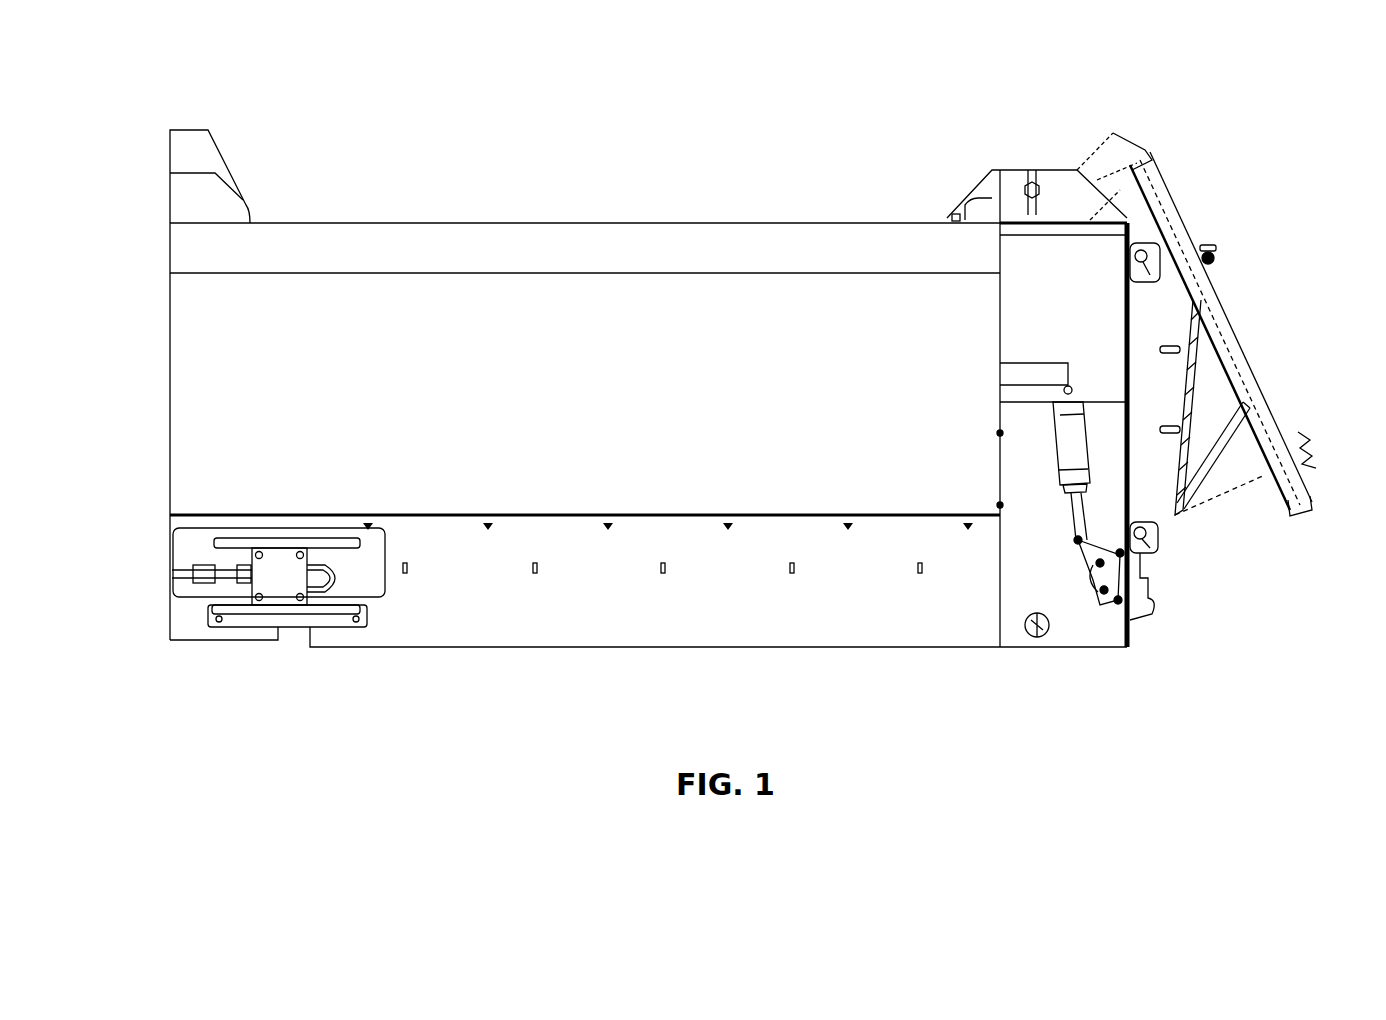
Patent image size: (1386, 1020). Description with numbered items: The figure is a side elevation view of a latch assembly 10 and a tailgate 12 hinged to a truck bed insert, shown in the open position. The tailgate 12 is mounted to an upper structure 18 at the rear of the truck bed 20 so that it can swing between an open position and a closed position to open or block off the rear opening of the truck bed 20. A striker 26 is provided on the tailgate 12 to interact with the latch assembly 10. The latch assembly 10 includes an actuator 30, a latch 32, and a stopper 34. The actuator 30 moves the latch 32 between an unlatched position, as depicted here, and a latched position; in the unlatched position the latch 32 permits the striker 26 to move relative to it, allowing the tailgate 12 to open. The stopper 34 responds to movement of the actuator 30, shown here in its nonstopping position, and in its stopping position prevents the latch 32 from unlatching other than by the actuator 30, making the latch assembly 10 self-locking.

The latch assembly 10 is at (1048, 578).
The tailgate 12 is at (1180, 222).
The upper structure 18 is at (990, 185).
The truck bed 20 is at (690, 222).
The striker 26 is at (1295, 505).
The actuator 30 is at (1065, 437).
The latch 32 is at (1145, 608).
The stopper 34 is at (1097, 578).